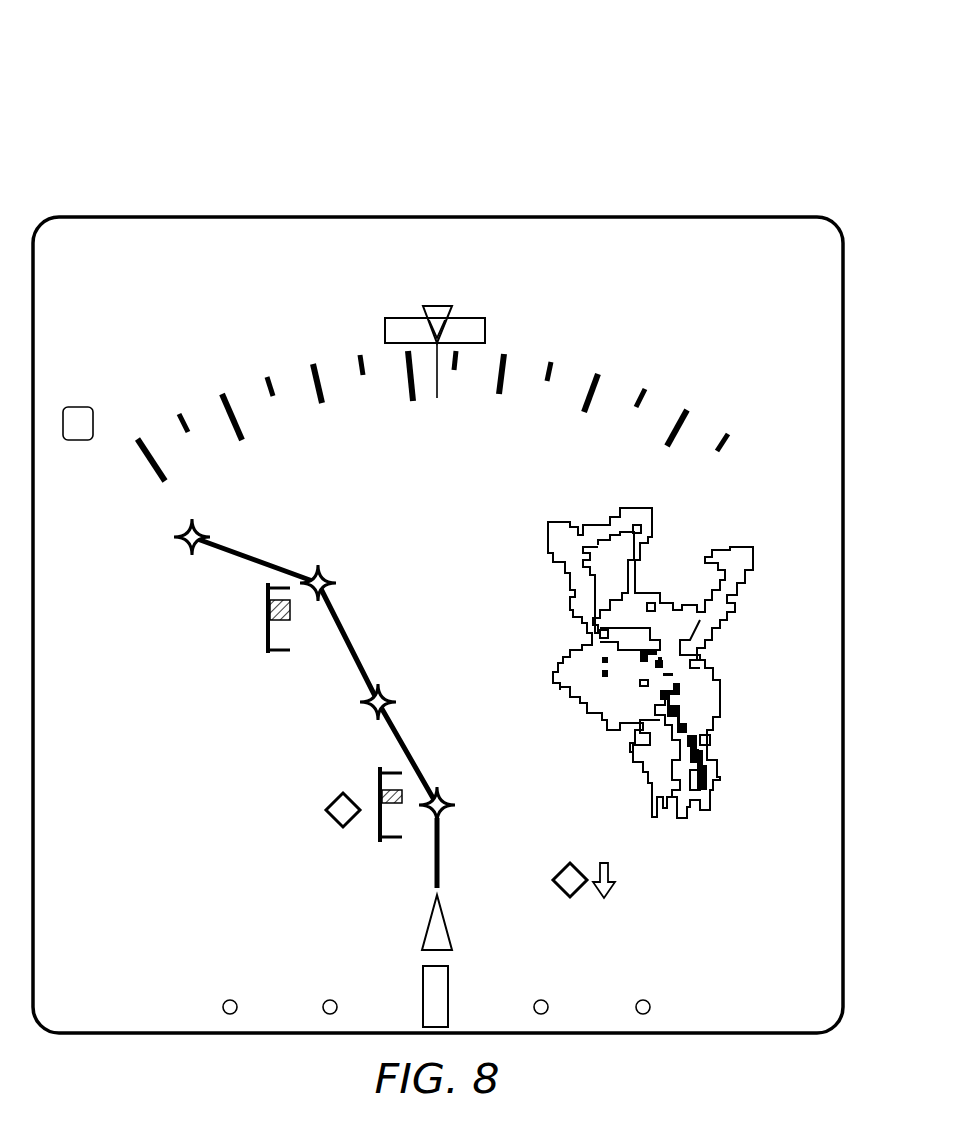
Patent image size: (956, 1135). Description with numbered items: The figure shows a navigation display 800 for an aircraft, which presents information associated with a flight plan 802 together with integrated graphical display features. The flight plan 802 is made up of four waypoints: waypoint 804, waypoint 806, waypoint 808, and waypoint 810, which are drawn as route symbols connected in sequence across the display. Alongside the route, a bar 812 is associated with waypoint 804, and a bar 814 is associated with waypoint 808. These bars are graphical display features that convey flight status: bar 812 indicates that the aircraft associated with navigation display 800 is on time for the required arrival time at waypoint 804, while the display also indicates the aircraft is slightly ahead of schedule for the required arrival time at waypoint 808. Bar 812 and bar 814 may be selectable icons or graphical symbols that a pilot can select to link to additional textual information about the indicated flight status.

The navigation display 800 is at (122, 122).
The flight plan 802 is at (196, 818).
The waypoint 804 is at (445, 816).
The waypoint 806 is at (372, 712).
The waypoint 808 is at (333, 592).
The waypoint 810 is at (186, 548).
The bar 812 is at (393, 838).
The bar 814 is at (267, 636).